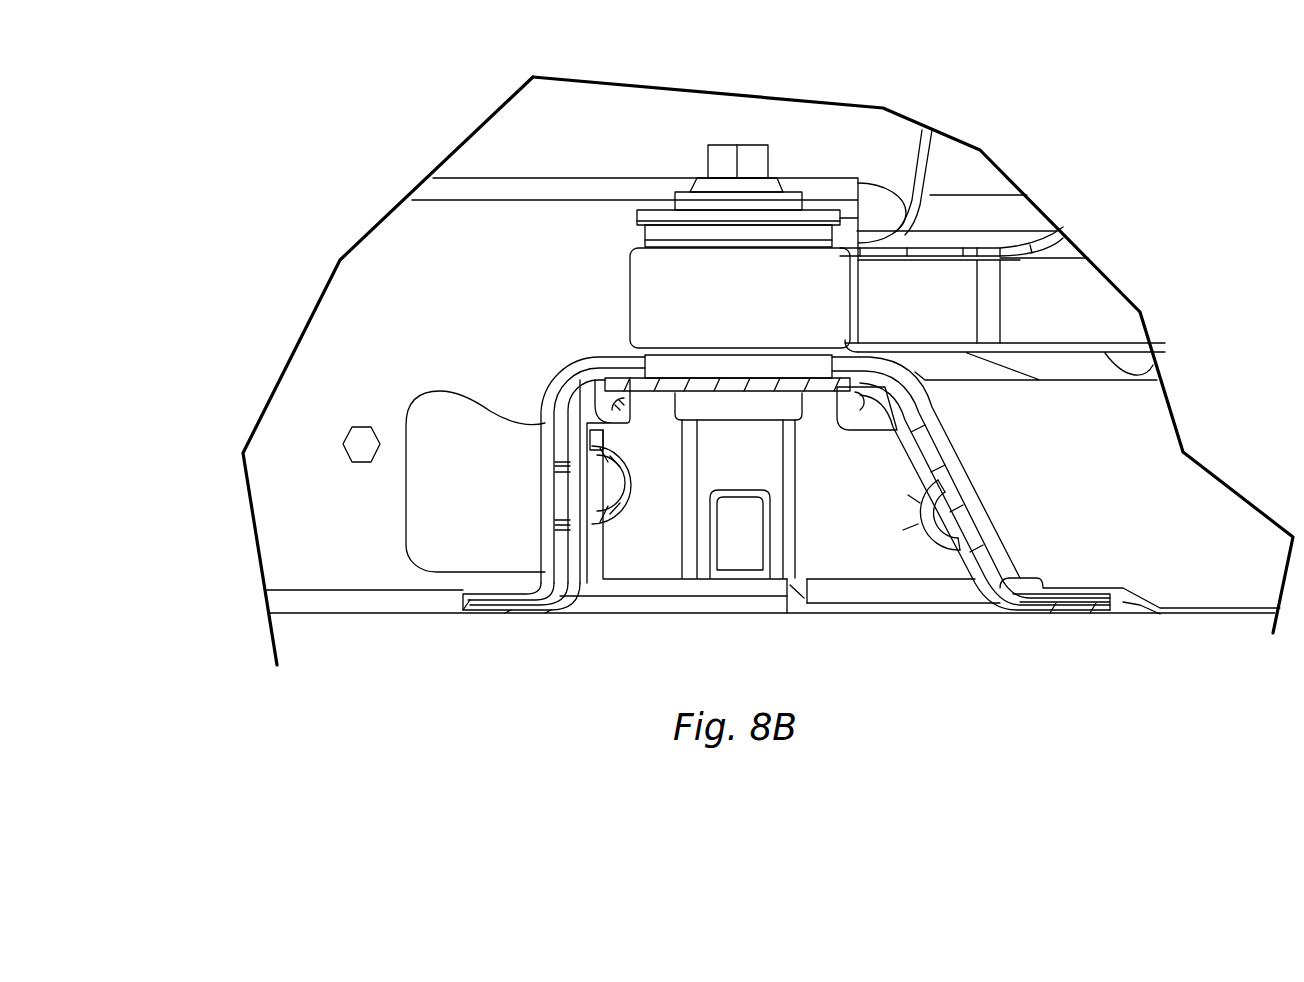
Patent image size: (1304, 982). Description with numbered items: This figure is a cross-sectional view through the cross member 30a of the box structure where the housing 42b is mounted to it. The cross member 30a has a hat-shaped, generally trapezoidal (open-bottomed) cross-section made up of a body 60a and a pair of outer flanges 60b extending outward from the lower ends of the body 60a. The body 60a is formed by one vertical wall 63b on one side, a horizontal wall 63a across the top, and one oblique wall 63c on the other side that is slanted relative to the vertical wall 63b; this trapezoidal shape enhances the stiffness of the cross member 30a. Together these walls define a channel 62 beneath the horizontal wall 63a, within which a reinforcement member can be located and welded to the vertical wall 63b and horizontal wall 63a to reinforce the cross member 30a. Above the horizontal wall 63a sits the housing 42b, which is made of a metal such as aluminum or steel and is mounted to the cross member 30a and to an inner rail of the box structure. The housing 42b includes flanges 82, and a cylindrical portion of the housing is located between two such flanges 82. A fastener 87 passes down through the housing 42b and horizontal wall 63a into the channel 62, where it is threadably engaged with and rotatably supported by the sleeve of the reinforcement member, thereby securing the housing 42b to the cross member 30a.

The cross member 30a is at (470, 627).
The body 60a is at (573, 420).
The outer flanges 60b is at (508, 615).
The channel 62 is at (818, 538).
The horizontal wall 63a is at (641, 383).
The vertical wall 63b is at (577, 538).
The oblique wall 63c is at (987, 580).
The flanges 82 is at (660, 277).
The fastener 87 is at (745, 163).
The housing 42b is at (932, 300).